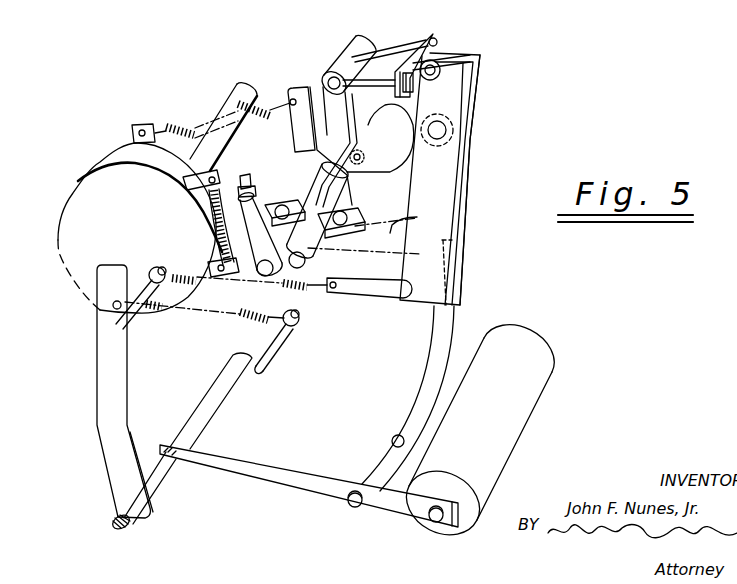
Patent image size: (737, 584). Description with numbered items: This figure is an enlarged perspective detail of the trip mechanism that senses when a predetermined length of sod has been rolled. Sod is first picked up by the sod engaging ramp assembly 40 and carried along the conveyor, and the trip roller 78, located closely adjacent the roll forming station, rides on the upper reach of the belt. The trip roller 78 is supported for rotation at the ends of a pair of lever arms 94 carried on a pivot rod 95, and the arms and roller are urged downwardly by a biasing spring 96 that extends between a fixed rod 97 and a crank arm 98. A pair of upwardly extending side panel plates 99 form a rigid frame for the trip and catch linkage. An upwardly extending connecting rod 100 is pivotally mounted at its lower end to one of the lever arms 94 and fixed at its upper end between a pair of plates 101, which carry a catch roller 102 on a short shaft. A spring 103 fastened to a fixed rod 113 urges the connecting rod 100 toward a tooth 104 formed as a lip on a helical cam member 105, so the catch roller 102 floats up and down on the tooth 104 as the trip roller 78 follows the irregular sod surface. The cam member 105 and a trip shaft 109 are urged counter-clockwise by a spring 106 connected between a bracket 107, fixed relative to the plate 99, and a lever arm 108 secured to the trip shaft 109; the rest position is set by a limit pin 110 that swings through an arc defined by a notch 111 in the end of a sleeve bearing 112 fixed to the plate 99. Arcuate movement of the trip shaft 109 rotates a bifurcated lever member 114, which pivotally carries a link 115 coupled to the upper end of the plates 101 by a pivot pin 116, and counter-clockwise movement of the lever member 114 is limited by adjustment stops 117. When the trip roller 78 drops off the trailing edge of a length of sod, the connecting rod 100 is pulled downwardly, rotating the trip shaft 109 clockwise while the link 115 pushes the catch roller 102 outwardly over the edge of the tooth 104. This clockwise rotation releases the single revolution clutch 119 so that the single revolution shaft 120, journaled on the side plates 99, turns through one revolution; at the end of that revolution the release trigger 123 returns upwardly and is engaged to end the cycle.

The sod engaging ramp assembly 40 is at (492, 0).
The trip roller 78 is at (502, 418).
The lever arms 94 is at (292, 480).
The pivot rod 95 is at (163, 483).
The biasing spring 96 is at (241, 330).
The fixed rod 97 is at (277, 347).
The crank arm 98 is at (103, 417).
The side panel plates 99 is at (420, 218).
The connecting rod 100 is at (434, 353).
The plates 101 is at (443, 193).
The catch roller 102 is at (460, 110).
The spring 103 is at (295, 292).
The tooth 104 is at (418, 110).
The helical cam member 105 is at (436, 141).
The spring 106 is at (175, 123).
The bracket 107 is at (123, 133).
The lever arm 108 is at (287, 130).
The trip shaft 109 is at (357, 164).
The limit pin 110 is at (252, 208).
The notch 111 is at (317, 187).
The sleeve bearing 112 is at (305, 200).
The fixed rod 113 is at (143, 290).
The bifurcated lever member 114 is at (350, 46).
The link 115 is at (392, 48).
The pivot pin 116 is at (450, 60).
The adjustment stops 117 is at (350, 133).
The single revolution clutch 119 is at (110, 160).
The single revolution shaft 120 is at (233, 97).
The release trigger 123 is at (193, 197).